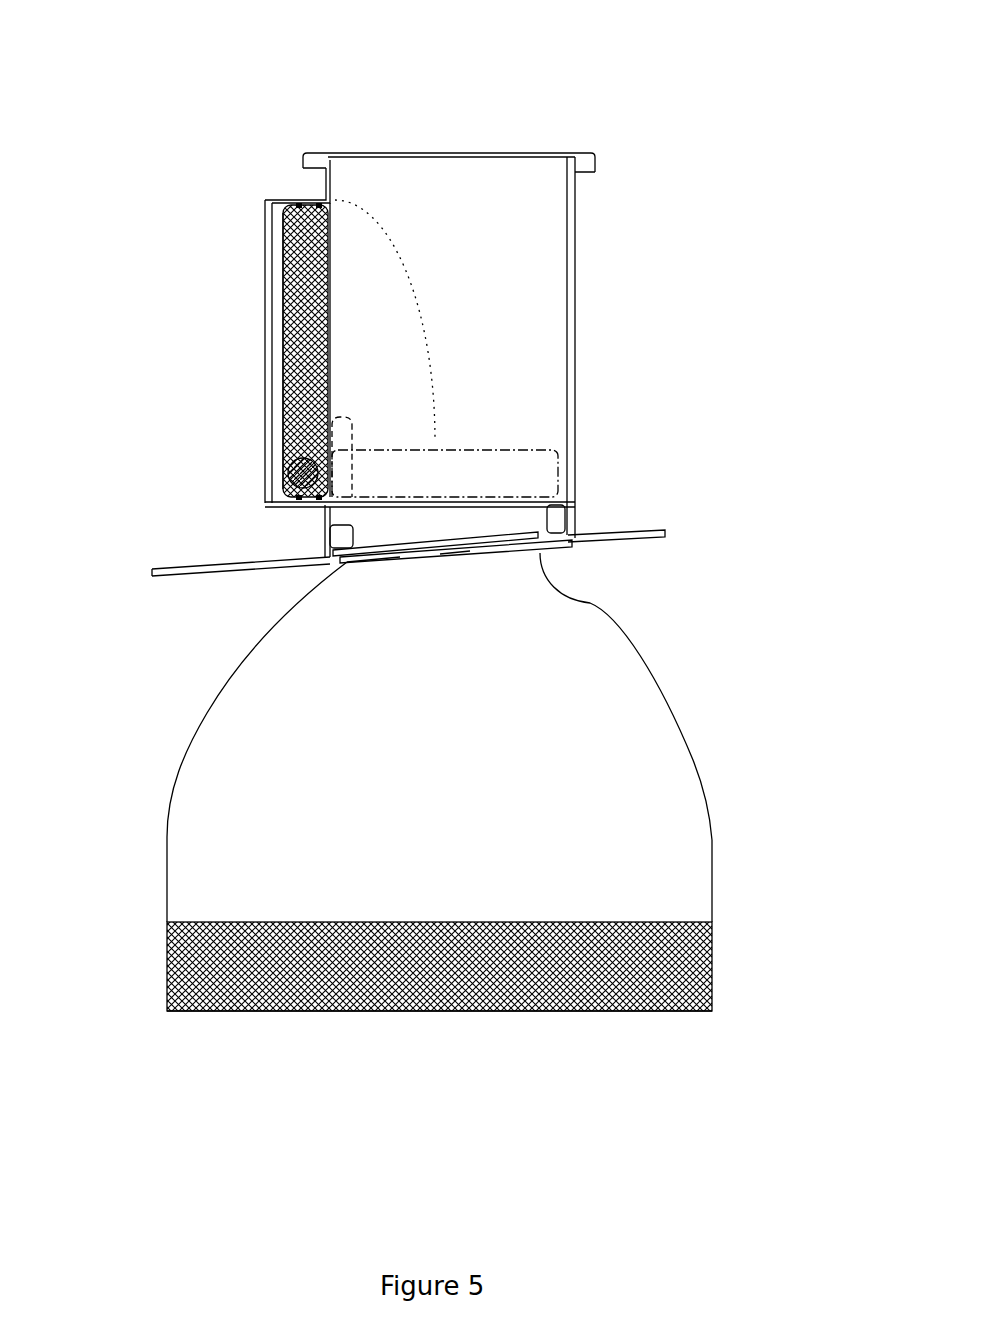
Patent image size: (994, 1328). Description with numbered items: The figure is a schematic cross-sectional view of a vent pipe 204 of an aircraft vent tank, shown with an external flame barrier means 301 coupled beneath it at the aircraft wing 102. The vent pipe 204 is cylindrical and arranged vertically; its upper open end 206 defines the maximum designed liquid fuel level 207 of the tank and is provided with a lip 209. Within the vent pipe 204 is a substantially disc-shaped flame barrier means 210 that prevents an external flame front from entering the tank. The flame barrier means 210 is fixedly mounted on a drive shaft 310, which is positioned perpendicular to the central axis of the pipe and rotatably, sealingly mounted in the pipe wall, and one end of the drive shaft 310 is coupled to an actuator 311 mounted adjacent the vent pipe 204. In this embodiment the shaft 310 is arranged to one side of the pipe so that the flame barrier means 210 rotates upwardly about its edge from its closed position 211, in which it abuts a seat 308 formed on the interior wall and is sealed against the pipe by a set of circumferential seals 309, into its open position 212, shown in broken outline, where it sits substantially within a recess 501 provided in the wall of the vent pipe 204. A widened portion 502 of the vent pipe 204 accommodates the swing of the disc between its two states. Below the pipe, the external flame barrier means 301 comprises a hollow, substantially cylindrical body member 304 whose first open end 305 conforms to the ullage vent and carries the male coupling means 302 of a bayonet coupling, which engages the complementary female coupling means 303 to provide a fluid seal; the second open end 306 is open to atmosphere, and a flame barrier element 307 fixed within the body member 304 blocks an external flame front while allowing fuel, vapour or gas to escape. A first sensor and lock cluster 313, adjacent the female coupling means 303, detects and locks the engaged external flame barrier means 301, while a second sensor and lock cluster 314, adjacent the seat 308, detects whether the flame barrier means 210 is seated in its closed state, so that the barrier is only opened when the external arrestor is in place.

The aircraft wing 102 is at (150, 572).
The vent pipe 204 is at (577, 252).
The upper open end 206 is at (560, 153).
The maximum designed liquid fuel level 207 is at (457, 550).
The lip 209 is at (598, 170).
The flame barrier means 210 is at (300, 323).
The first position (closed state) 211 is at (553, 465).
The second position (open state) 212 is at (283, 345).
The external flame barrier means 301 is at (133, 856).
The male coupling means 302 is at (350, 560).
The female coupling means 303 is at (347, 553).
The body member 304 is at (703, 783).
The first open end 305 is at (400, 553).
The second open end 306 is at (225, 1011).
The flame barrier element 307 is at (580, 962).
The seat 308 is at (327, 505).
The circumferential seals 309 is at (267, 198).
The drive shaft 310 is at (282, 462).
The actuator 311 is at (272, 473).
The first sensor and lock cluster 313 is at (340, 542).
The second sensor and lock cluster 314 is at (557, 520).
The recess 501 is at (265, 267).
The widened portion 502 is at (400, 272).